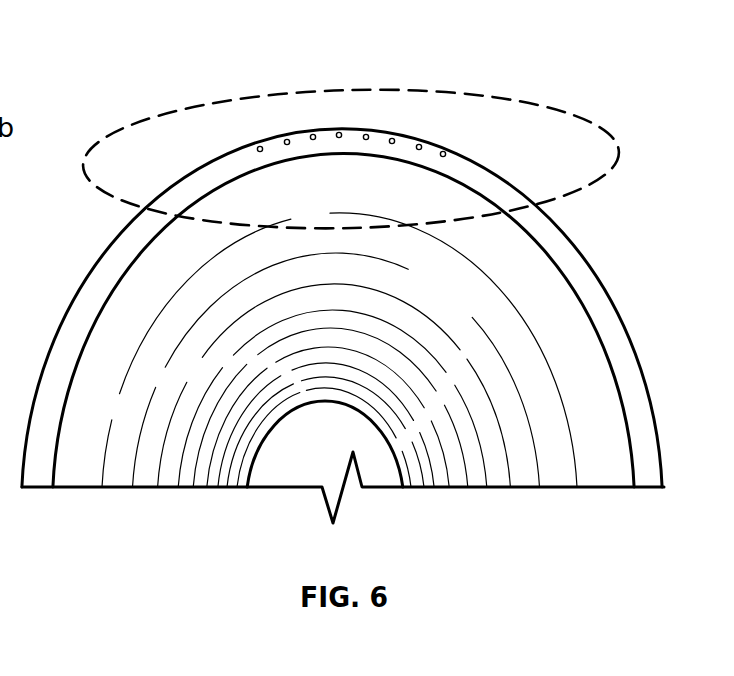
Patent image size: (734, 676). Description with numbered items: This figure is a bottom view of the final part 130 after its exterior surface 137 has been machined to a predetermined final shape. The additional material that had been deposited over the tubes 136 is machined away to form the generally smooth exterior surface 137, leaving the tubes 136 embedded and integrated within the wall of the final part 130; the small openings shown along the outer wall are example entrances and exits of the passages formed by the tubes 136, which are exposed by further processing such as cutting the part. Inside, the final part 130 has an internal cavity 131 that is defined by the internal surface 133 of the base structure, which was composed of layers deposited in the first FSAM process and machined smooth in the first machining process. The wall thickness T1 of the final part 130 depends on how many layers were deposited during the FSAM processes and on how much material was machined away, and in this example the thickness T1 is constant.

The final part 130 is at (356, 78).
The internal cavity 131 is at (293, 462).
The internal surface 133 is at (140, 368).
The tubes 136 is at (259, 146).
The exterior surface 137 is at (607, 300).
The thickness T1 is at (624, 409).